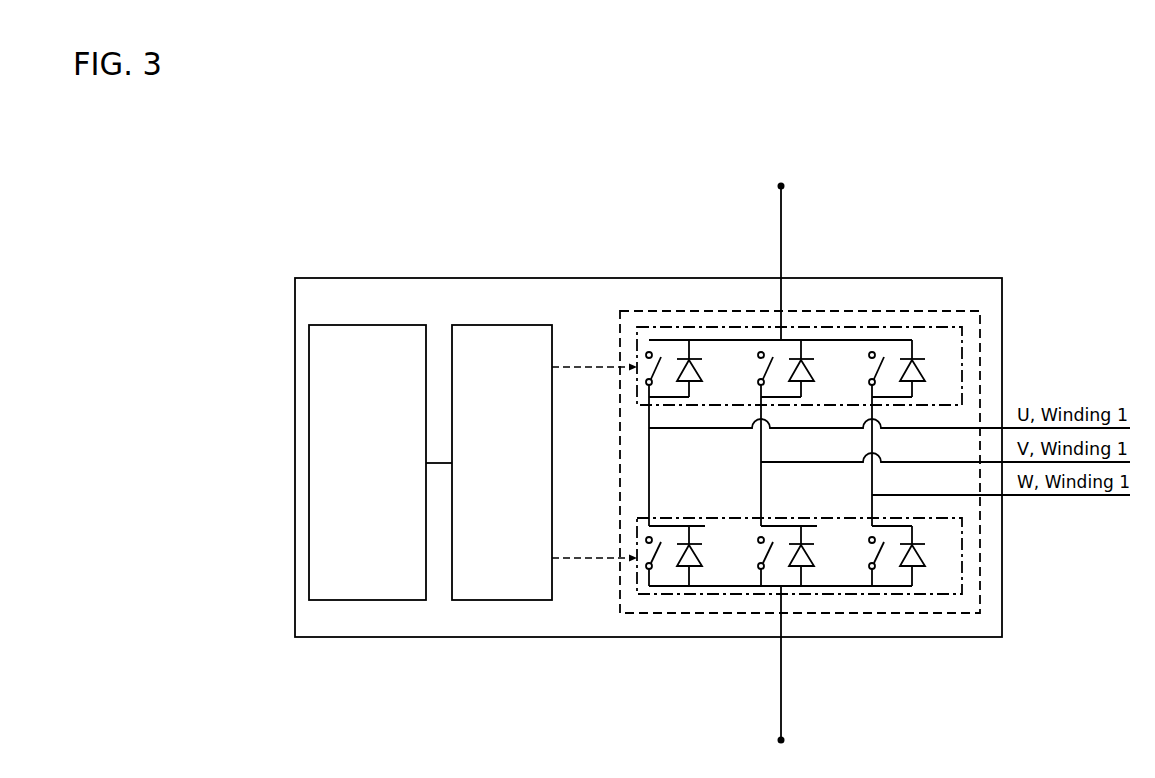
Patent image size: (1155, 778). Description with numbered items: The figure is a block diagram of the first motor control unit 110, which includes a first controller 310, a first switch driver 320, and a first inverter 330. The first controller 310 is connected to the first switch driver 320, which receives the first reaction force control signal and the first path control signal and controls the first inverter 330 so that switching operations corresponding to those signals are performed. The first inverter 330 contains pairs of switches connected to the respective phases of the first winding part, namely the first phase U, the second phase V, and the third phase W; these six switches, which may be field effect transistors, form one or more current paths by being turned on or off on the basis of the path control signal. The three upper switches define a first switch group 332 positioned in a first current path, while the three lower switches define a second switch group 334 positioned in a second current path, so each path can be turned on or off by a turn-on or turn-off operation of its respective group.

The first motor control unit 110 is at (378, 278).
The first controller 310 is at (367, 600).
The first switch driver 320 is at (502, 600).
The first inverter 330 is at (710, 311).
The first switch group 332 is at (897, 326).
The second switch group 334 is at (835, 594).